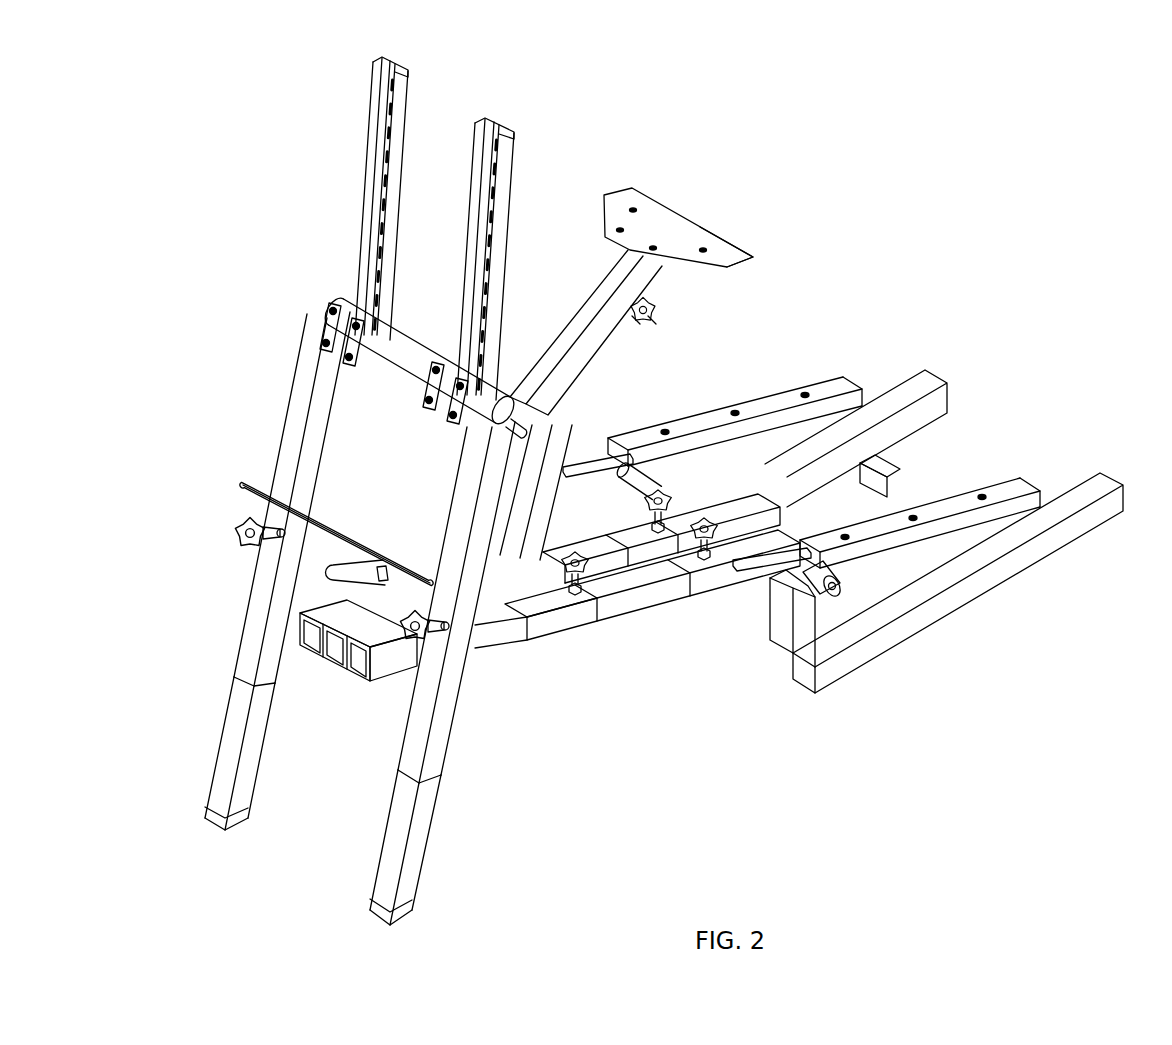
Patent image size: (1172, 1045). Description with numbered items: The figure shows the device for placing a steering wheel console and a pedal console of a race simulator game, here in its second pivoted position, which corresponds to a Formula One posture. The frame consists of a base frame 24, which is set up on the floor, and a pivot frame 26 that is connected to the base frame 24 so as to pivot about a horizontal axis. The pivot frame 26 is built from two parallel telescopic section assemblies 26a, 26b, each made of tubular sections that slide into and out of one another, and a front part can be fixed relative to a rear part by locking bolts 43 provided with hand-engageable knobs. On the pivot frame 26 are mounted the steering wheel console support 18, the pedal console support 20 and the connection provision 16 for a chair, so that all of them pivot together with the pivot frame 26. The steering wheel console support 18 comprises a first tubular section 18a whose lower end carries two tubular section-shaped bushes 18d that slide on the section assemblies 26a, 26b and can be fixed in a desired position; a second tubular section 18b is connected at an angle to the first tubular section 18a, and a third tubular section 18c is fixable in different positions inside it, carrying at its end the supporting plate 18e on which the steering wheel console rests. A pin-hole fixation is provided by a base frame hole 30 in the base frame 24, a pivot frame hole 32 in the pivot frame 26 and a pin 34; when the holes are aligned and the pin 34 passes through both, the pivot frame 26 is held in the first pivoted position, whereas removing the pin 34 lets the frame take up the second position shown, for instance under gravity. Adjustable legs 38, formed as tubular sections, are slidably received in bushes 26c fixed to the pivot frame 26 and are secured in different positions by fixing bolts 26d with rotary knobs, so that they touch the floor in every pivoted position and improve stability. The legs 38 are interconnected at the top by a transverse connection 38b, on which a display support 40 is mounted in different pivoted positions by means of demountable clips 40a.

The connection provision 16 is at (847, 375).
The steering wheel console support 18 is at (688, 204).
The first tubular section 18a is at (562, 430).
The second tubular section 18b is at (575, 337).
The third tubular section 18c is at (655, 263).
The tubular section-shaped bushes 18d is at (557, 620).
The supporting plate 18e is at (730, 252).
The pedal console support 20 is at (347, 533).
The base frame 24 is at (928, 385).
The pivot frame 26 is at (647, 613).
The telescopic section assembly 26a is at (615, 605).
The telescopic section assembly 26b is at (603, 545).
The bushes 26c is at (255, 643).
The fixing bolts 26d is at (245, 532).
The base frame hole 30 is at (773, 580).
The pivot frame hole 32 is at (633, 465).
The pin 34 is at (832, 597).
The adjustable legs 38 is at (392, 843).
The transverse connection 38b is at (403, 345).
The display support 40 is at (503, 120).
The demountable clips 40a is at (330, 328).
The locking bolts 43 is at (707, 523).